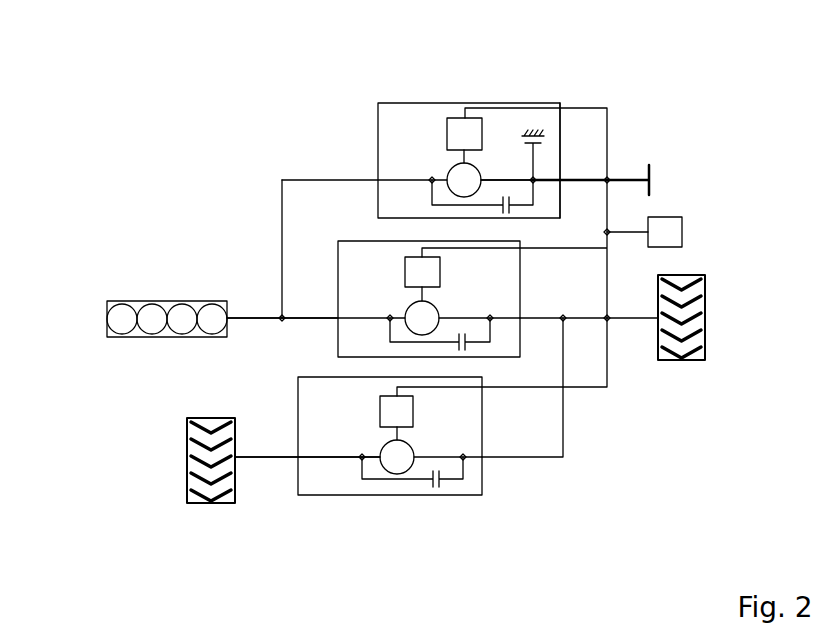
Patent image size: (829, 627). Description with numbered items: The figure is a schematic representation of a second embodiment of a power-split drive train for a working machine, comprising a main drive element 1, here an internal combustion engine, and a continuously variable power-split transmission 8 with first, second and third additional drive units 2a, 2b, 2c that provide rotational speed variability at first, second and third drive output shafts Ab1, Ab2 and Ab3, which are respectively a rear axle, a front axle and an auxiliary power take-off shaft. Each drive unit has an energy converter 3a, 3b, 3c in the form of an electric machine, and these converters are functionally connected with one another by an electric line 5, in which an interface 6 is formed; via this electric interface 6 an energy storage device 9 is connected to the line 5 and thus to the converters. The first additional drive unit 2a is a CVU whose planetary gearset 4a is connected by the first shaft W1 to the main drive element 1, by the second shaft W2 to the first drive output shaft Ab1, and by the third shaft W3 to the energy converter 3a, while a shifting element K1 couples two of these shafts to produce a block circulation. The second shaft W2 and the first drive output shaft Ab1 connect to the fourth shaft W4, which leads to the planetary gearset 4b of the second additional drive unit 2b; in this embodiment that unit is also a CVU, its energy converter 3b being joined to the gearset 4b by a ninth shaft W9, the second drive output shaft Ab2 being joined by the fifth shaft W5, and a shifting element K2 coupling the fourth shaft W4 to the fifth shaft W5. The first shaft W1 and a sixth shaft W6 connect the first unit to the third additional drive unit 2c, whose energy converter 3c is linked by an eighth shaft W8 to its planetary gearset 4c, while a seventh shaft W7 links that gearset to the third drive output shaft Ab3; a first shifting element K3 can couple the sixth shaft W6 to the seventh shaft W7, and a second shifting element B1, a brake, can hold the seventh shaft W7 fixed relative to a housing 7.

The main drive element 1 is at (100, 299).
The first additional drive unit 2a is at (338, 255).
The second additional drive unit 2b is at (482, 472).
The third additional drive unit 2c is at (378, 155).
The energy converter 3a is at (442, 272).
The energy converter 3b is at (380, 410).
The energy converter 3c is at (447, 126).
The planetary gearset 4a is at (417, 327).
The planetary gearset 4b is at (397, 470).
The planetary gearset 4c is at (447, 175).
The electric line 5 is at (606, 107).
The interface 6 is at (609, 231).
The housing 7 is at (534, 130).
The continuously variable power-split transmission 8 is at (650, 503).
The energy storage device 9 is at (684, 233).
The second shifting element B1 is at (557, 134).
The shifting element K1 is at (479, 364).
The shifting element K2 is at (437, 499).
The first shifting element K3 is at (516, 208).
The first shaft W1 is at (320, 319).
The second shaft W2 is at (538, 319).
The third shaft W3 is at (405, 296).
The fourth shaft W4 is at (565, 440).
The fifth shaft W5 is at (313, 460).
The sixth shaft W6 is at (280, 243).
The seventh shaft W7 is at (508, 180).
The eighth shaft W8 is at (455, 158).
The ninth shaft W9 is at (390, 432).
The first drive output shaft Ab1 is at (622, 321).
The second drive output shaft Ab2 is at (262, 460).
The third drive output shaft Ab3 is at (612, 178).